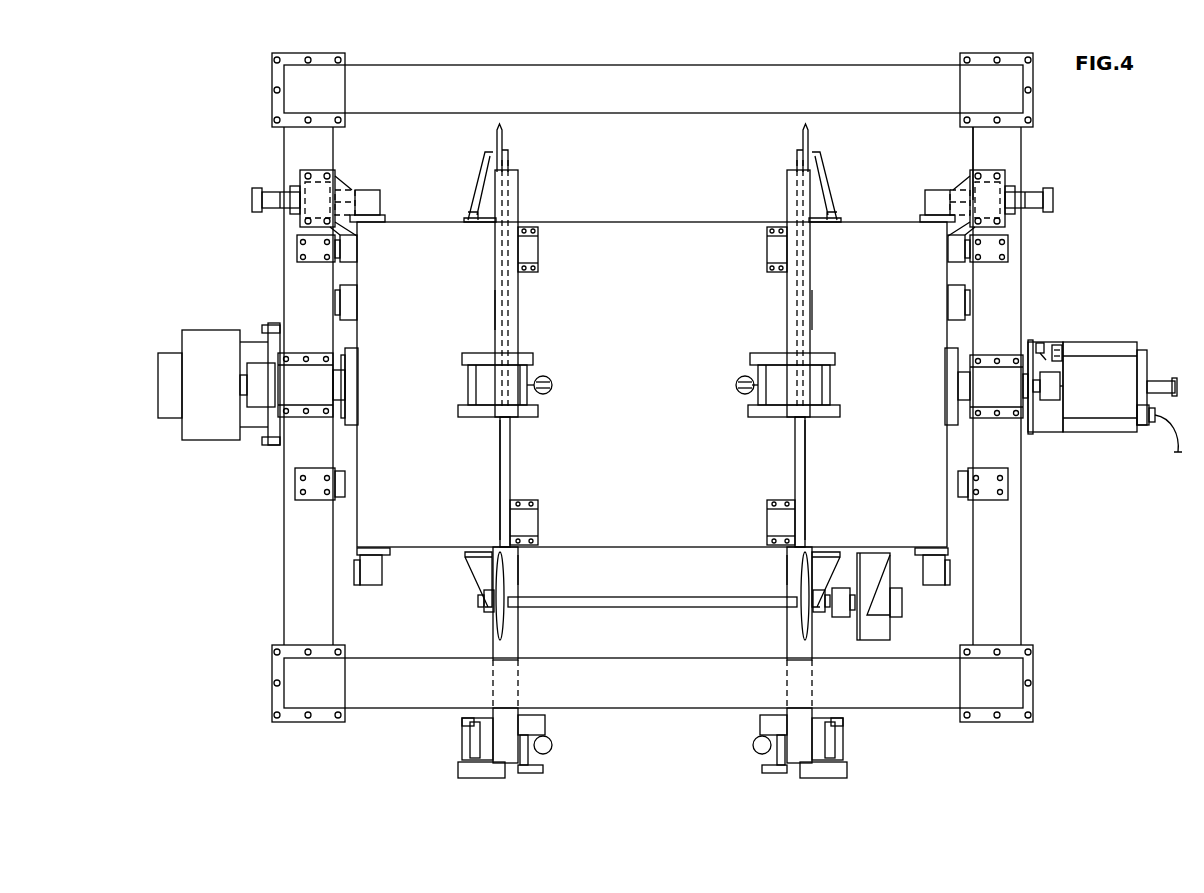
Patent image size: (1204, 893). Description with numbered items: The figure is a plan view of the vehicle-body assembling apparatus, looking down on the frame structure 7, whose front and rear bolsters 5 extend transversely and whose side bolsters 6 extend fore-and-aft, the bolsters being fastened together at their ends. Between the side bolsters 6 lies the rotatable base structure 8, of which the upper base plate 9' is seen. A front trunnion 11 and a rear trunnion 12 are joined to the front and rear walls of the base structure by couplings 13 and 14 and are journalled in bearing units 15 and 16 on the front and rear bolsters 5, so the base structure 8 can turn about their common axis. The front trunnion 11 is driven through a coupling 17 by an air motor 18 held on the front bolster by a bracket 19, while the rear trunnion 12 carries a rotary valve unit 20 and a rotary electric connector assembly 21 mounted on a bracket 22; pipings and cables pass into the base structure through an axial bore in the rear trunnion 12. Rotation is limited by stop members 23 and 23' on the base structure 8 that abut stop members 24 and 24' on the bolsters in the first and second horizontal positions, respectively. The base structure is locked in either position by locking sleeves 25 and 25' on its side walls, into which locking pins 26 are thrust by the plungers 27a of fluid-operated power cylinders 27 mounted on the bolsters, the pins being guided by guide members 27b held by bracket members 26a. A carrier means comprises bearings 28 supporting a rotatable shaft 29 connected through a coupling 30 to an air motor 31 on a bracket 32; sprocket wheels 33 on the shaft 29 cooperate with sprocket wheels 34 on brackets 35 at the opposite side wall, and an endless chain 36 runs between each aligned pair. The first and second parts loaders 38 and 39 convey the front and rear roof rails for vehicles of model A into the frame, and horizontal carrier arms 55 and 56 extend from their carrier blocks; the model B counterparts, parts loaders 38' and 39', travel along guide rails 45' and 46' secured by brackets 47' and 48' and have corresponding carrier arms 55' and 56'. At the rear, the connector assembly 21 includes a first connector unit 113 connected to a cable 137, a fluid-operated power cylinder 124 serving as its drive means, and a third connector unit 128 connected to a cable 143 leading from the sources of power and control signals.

The front and rear bolsters 5 is at (284, 592).
The side bolsters 6 is at (1020, 90).
The frame structure 7 is at (1032, 139).
The rotatable base structure 8 is at (425, 550).
The base plate 9' is at (651, 437).
The front trunnion 11 is at (345, 362).
The rear trunnion 12 is at (985, 362).
The coupling 13 is at (352, 425).
The coupling 14 is at (947, 355).
The bearing unit 15 is at (298, 400).
The bearing unit 16 is at (1010, 352).
The coupling 17 is at (262, 372).
The air motor 18 is at (205, 441).
The bracket 19 is at (256, 432).
The rotary valve unit 20 is at (1058, 395).
The rotary-type electric connector assembly 21 is at (1128, 348).
The bracket 22 is at (1050, 432).
The stop member 23 is at (672, 268).
The stop member 23' is at (652, 308).
The stop member 24 is at (652, 255).
The stop member 24' is at (651, 484).
The locking sleeve 25 is at (652, 185).
The locking sleeve 25' is at (655, 585).
The locking pin 26 is at (337, 187).
The bracket member 26a is at (320, 172).
The fluid-operated power cylinder 27 is at (258, 192).
The plunger 27a is at (278, 208).
The guide member 27b is at (345, 190).
The bearing 28 is at (489, 612).
The rotatable shaft 29 is at (690, 608).
The coupling 30 is at (841, 618).
The air motor 31 is at (876, 641).
The bracket 32 is at (878, 552).
The sprocket wheel 33 is at (506, 636).
The sprocket wheel 34 is at (503, 130).
The bracket 35 is at (478, 192).
The endless chain 36 is at (500, 450).
The first parts loader 38 is at (534, 746).
The first parts loader 38' is at (530, 380).
The second parts loader 39 is at (757, 746).
The second parts loader 39' is at (770, 393).
The guide rail 45' is at (532, 480).
The guide rail 46' is at (771, 480).
The bracket 47' is at (553, 386).
The bracket 48' is at (756, 386).
The carrier arm 55 is at (541, 570).
The carrier arm 55' is at (535, 310).
The carrier arm 56 is at (762, 572).
The carrier arm 56' is at (775, 311).
The first connector unit 113 is at (1062, 348).
The fluid-operated power cylinder 124 is at (1165, 381).
The third connector unit 128 is at (1145, 425).
The cable 137 is at (1042, 345).
The cable 143 is at (1176, 452).